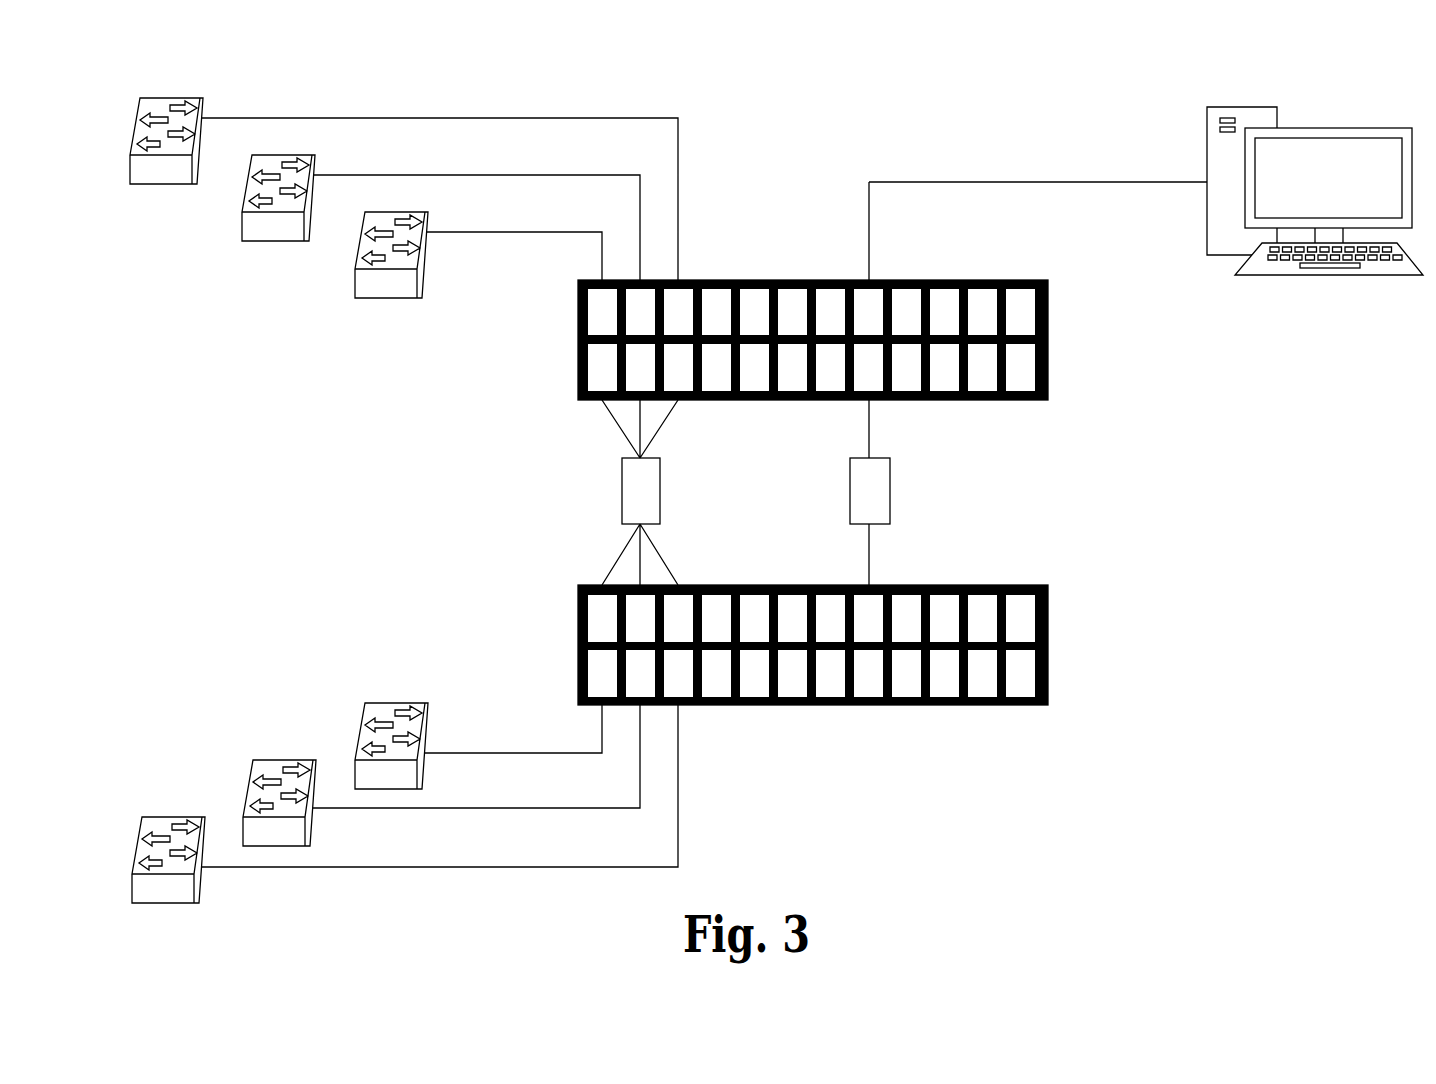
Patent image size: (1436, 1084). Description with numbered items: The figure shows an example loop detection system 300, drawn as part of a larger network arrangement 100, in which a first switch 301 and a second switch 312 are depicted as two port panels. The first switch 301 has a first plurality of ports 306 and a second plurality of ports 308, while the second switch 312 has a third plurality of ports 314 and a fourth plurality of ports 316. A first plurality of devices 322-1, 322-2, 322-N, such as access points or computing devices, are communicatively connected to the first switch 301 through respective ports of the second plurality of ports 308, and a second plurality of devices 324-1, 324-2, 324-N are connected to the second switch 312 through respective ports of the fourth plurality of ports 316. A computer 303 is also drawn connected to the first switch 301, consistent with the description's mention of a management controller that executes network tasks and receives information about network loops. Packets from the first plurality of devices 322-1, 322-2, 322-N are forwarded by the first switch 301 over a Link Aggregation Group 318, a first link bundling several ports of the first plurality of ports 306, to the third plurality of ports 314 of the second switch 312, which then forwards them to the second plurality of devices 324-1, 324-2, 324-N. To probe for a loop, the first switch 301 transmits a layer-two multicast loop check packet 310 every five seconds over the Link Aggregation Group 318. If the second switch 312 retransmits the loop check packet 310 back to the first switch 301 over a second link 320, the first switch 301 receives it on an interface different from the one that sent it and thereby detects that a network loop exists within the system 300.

The network management system 100 is at (1205, 465).
The loop detection system 300 is at (530, 88).
The first switch 301 is at (813, 340).
The management computer 303 is at (1337, 105).
The first plurality of ports 306 is at (572, 370).
The second plurality of ports 308 is at (572, 316).
The loop check packet 310 is at (650, 465).
The second switch 312 is at (813, 645).
The third plurality of ports 314 is at (572, 618).
The fourth plurality of ports 316 is at (572, 672).
The Link Aggregation Group (LAG) 318 is at (665, 540).
The second link 320 is at (880, 552).
The first device of the first plurality of devices 322-1 is at (385, 310).
The second device of the first plurality of devices 322-2 is at (272, 253).
The Nth device of the first plurality of devices 322-N is at (162, 192).
The first device of the second plurality of devices 324-1 is at (390, 690).
The second device of the second plurality of devices 324-2 is at (275, 748).
The Nth device of the second plurality of devices 324-N is at (165, 805).